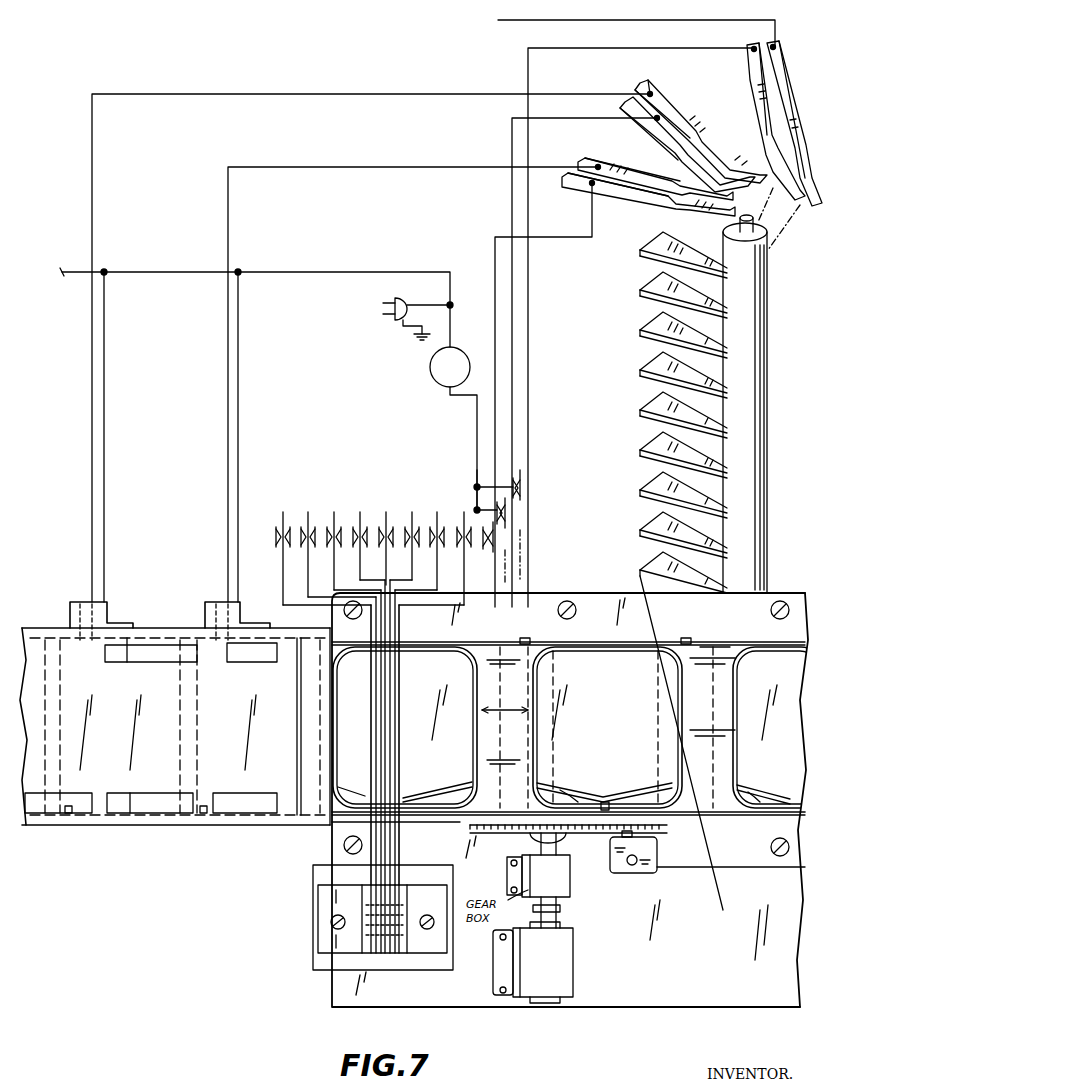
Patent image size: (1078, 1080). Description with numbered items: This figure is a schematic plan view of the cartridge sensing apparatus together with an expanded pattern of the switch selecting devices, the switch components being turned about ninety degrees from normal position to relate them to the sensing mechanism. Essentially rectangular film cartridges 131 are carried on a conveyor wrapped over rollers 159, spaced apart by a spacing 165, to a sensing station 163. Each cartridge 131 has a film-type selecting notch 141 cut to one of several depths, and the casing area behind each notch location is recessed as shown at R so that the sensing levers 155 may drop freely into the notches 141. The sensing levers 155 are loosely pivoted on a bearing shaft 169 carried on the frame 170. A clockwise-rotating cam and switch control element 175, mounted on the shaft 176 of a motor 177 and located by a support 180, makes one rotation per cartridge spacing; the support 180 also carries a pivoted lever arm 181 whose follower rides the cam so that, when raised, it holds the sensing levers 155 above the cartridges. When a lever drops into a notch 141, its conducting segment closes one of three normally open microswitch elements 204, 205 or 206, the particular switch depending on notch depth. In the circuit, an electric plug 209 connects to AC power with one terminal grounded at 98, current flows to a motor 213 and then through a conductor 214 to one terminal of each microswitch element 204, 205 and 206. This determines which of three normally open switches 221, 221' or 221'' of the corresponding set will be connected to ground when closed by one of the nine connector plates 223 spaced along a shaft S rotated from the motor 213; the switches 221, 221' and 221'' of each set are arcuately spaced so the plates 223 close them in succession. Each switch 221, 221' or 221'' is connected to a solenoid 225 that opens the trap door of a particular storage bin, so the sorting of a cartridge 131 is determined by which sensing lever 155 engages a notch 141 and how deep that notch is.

The ground 98 is at (418, 328).
The film cartridge 131 is at (422, 665).
The notch 141 is at (580, 803).
The sensing levers 155 is at (400, 697).
The rollers 159 is at (727, 668).
The sensing station 163 is at (345, 822).
The spacing 165 is at (505, 711).
The bearing shaft 169 is at (353, 920).
The frame 170 is at (438, 963).
The cam and switch control element 175 is at (592, 850).
The shaft 176 is at (562, 919).
The motor 177 is at (575, 959).
The support 180 is at (657, 858).
The lever arm 181 is at (500, 835).
The microswitch element 204 is at (495, 540).
The microswitch element 205 is at (507, 514).
The microswitch element 206 is at (522, 490).
The electric plug 209 is at (402, 302).
The motor 213 is at (455, 350).
The conductor 214 is at (472, 487).
The microswitch element 221 is at (648, 179).
The microswitch element 221' is at (693, 136).
The microswitch element 221'' is at (793, 123).
The connector plates 223 is at (650, 328).
The solenoid 225 is at (207, 612).
The recess R is at (573, 805).
The shaft S is at (761, 390).